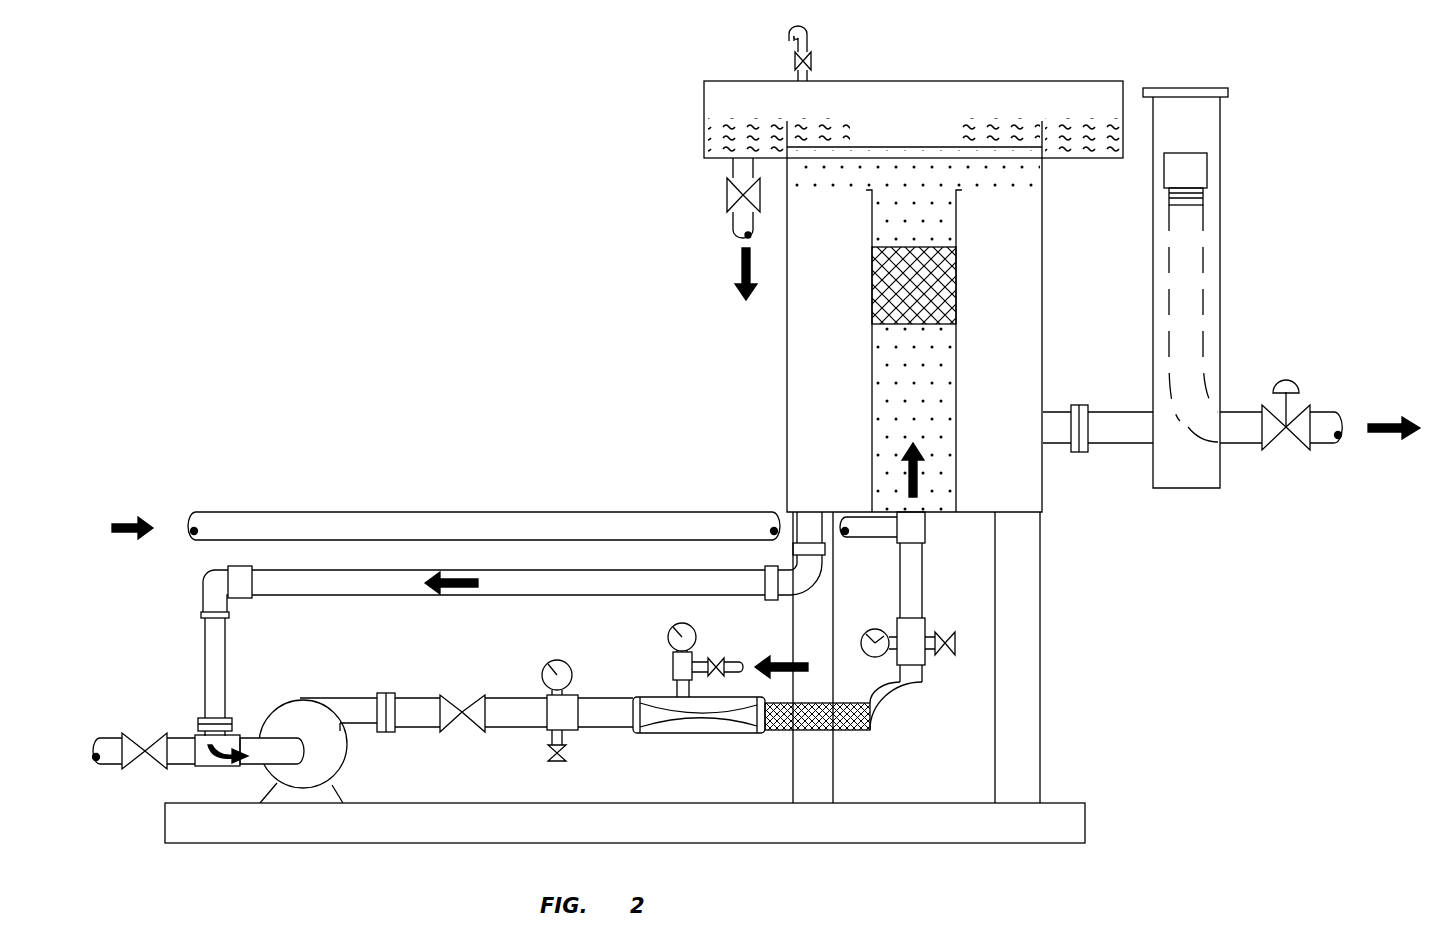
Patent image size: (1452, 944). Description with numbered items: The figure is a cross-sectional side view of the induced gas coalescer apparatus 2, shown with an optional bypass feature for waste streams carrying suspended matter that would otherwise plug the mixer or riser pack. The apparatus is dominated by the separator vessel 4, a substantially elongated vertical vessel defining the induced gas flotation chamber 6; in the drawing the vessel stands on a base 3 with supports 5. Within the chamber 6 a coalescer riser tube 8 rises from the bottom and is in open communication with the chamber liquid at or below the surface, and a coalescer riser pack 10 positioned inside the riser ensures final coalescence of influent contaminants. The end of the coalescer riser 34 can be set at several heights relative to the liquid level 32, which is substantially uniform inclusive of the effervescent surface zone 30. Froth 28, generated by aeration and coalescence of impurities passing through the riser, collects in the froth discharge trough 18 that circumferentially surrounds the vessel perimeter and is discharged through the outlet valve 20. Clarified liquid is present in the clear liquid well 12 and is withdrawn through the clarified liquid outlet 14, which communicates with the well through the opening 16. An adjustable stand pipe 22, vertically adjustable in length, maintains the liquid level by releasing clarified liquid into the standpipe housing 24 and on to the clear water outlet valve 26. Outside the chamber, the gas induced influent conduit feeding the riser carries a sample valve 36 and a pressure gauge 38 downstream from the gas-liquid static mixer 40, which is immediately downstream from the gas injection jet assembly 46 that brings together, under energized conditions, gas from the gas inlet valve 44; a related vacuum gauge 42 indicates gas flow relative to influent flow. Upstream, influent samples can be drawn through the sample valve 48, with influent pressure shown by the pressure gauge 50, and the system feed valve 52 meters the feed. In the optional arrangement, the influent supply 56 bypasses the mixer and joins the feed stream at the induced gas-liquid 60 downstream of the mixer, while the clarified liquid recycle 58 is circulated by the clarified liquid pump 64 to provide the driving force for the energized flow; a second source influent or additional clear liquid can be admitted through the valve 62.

The induced gas coalescer apparatus 2 is at (840, 78).
The base 3 is at (1074, 803).
The separator vessel 4 is at (787, 348).
The support 5 is at (1040, 606).
The induced gas flotation chamber 6 is at (829, 381).
The coalescer riser tube 8 is at (920, 397).
The coalescer riser pack 10 is at (958, 300).
The clear liquid well 12 is at (1007, 436).
The clarified liquid outlet 14 is at (1108, 412).
The opening 16 is at (1044, 434).
The froth discharge trough 18 is at (705, 147).
The outlet valve 20 is at (727, 197).
The adjustable stand pipe 22 is at (1206, 210).
The standpipe housing 24 is at (1218, 306).
The clear water outlet valve 26 is at (1288, 386).
The froth 28 is at (1072, 110).
The effervescent surface zone 30 is at (882, 148).
The liquid level 32 is at (944, 146).
The end of the coalescer riser 34 is at (960, 193).
The sample valve 36 is at (954, 646).
The pressure gauge 38 is at (880, 628).
The gas-liquid static mixer 40 is at (866, 732).
The vacuum gauge 42 is at (682, 624).
The gas inlet valve 44 is at (734, 665).
The gas injection jet assembly 46 is at (700, 734).
The sample valve 48 is at (556, 762).
The pressure gauge 50 is at (543, 670).
The system feed valve 52 is at (448, 696).
The influent supply 56 is at (286, 512).
The clarified liquid recycle 58 is at (334, 596).
The induced gas-liquid 60 is at (928, 520).
The valve 62 is at (154, 769).
The clarified liquid pump 64 is at (296, 696).